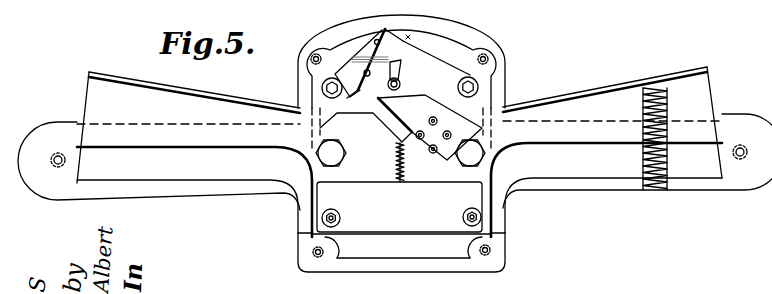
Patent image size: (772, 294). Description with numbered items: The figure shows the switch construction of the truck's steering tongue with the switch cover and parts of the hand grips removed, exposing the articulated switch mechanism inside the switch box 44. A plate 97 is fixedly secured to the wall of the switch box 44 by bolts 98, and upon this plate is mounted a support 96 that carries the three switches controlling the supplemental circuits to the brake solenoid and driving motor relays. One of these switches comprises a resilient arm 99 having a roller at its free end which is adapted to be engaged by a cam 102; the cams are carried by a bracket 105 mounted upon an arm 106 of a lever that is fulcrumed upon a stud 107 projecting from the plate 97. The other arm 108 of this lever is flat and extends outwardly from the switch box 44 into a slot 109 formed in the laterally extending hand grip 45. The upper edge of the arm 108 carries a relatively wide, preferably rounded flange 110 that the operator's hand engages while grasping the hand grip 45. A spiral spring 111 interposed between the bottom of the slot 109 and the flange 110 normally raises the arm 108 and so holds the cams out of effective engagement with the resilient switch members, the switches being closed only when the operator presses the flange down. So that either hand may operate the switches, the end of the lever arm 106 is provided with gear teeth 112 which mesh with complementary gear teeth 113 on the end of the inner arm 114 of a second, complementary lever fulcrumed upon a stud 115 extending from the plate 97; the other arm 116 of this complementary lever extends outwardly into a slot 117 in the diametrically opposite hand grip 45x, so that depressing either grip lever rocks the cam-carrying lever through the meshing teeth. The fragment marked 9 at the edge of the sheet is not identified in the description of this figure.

The switch box 44 is at (506, 66).
The hand grip 45 is at (562, 190).
The other hand grip 45x is at (223, 197).
The support 96 is at (385, 37).
The plate 97 is at (440, 63).
The bolts 98 is at (320, 84).
The resilient arm 99 is at (393, 68).
The cam 102 is at (401, 83).
The bracket 105 is at (423, 96).
The arm 106 is at (425, 181).
The stud 107 is at (467, 171).
The arm 108 is at (582, 133).
The slot 109 is at (699, 175).
The flange 110 is at (190, 93).
The spiral spring 111 is at (675, 165).
The gear teeth 112 is at (404, 163).
The gear teeth 113 is at (396, 162).
The inner arm 114 is at (368, 178).
The stud 115 is at (330, 157).
The arm 116 is at (228, 141).
The slot 117 is at (182, 180).
The partial numeral 9 is at (763, 94).